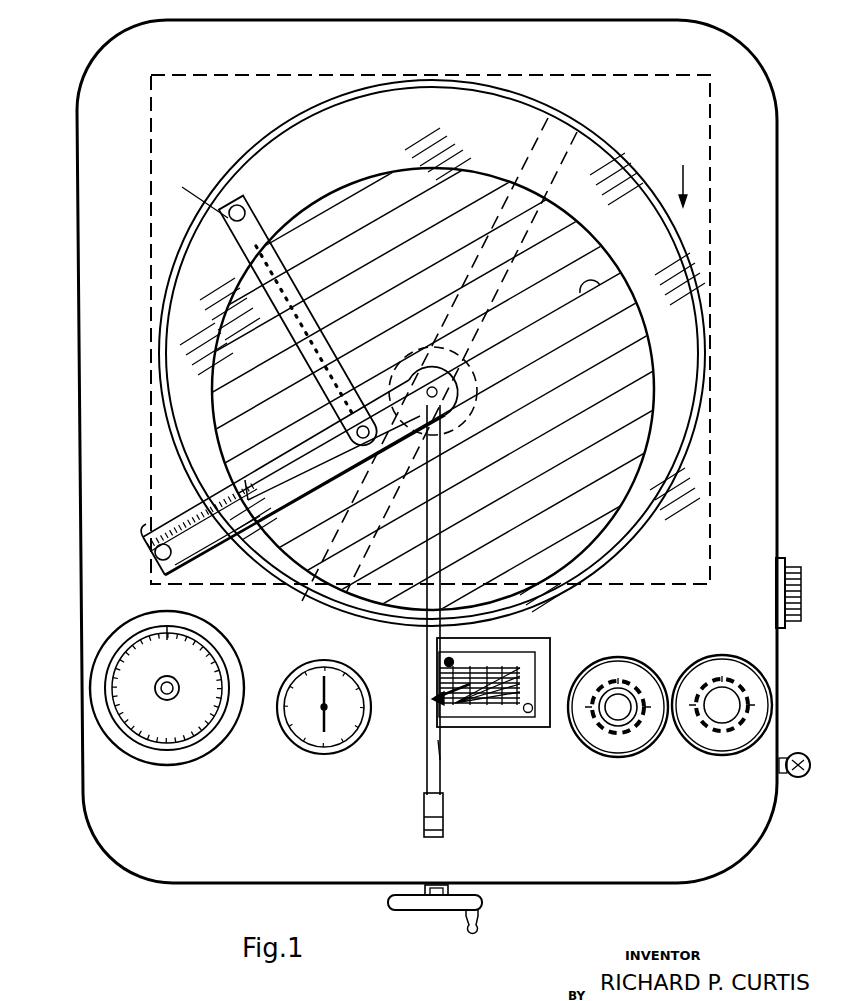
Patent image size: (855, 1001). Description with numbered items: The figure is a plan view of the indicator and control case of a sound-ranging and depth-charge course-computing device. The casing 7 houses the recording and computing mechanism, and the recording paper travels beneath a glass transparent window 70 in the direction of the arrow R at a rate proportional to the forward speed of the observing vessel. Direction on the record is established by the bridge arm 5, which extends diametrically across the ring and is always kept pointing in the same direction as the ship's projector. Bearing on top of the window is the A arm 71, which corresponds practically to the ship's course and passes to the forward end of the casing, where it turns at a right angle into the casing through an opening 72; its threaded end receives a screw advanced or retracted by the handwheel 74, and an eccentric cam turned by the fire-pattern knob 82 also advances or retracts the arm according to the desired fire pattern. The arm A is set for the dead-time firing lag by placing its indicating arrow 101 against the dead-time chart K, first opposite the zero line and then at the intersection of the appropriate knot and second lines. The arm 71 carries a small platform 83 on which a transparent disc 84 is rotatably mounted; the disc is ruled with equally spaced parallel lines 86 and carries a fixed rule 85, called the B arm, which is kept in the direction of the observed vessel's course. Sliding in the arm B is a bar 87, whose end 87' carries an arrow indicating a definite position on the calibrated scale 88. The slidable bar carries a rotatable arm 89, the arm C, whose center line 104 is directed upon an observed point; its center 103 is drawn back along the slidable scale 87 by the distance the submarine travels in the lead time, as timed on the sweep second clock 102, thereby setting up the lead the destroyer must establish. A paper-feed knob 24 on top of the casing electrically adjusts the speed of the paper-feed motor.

The casing 7 is at (776, 415).
The transparent window 70 is at (600, 177).
The transparent disc 84 is at (617, 333).
The parallel lines 86 is at (645, 262).
The bridge arm 5 is at (482, 240).
The platform 83 is at (478, 372).
The A arm 71 is at (432, 745).
The opening 72 is at (444, 820).
The A arm A is at (437, 763).
The slidable bar 87 is at (300, 452).
The calibrated scale 88 is at (222, 540).
The rule or scale (B arm) 85 is at (183, 517).
The end of slidable bar 87' is at (174, 532).
The B arm B is at (145, 536).
The center line of arm C 104 is at (253, 245).
The rotatable arm (arm C) 89 is at (257, 230).
The center of arm C 103 is at (355, 425).
The arm C is at (199, 194).
The arrow R is at (682, 174).
The dead-time chart K is at (512, 712).
The indicating arrow 101 is at (435, 698).
The sweep second clock 102 is at (297, 743).
The fire-pattern knob 82 is at (610, 727).
The paper-feed knob 24 is at (730, 725).
The handwheel 74 is at (430, 910).